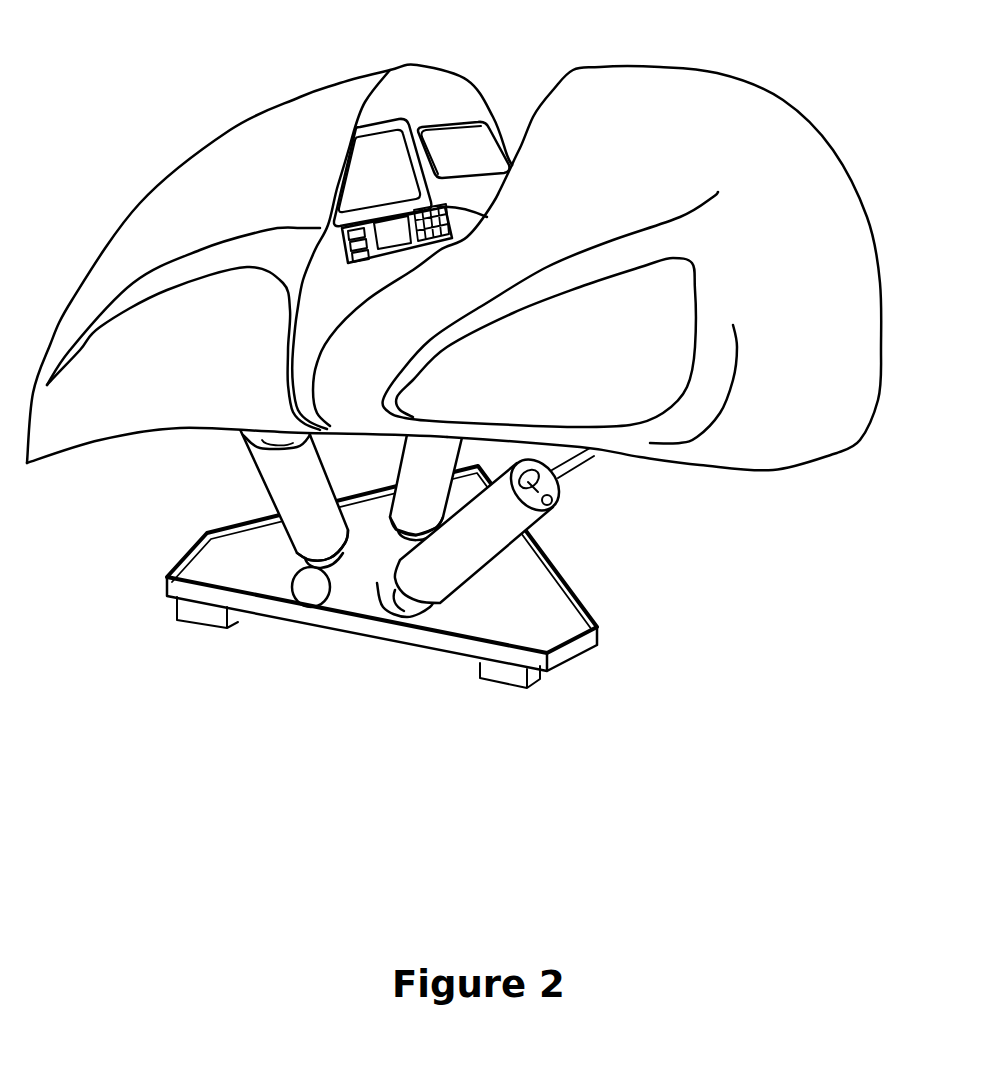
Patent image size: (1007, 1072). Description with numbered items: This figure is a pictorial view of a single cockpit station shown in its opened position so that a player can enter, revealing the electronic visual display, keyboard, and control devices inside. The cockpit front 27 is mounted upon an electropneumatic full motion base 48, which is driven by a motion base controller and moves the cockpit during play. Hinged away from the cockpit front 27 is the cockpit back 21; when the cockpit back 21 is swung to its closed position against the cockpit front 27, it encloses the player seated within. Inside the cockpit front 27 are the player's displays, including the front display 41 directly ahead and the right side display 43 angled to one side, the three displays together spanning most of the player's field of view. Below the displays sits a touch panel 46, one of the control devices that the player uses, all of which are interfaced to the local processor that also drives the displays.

The cockpit back 21 is at (687, 478).
The cockpit front 27 is at (130, 203).
The front display 41 is at (387, 163).
The right side display 43 is at (487, 138).
The touch panel 46 is at (390, 207).
The electropneumatic full motion base 48 is at (583, 675).